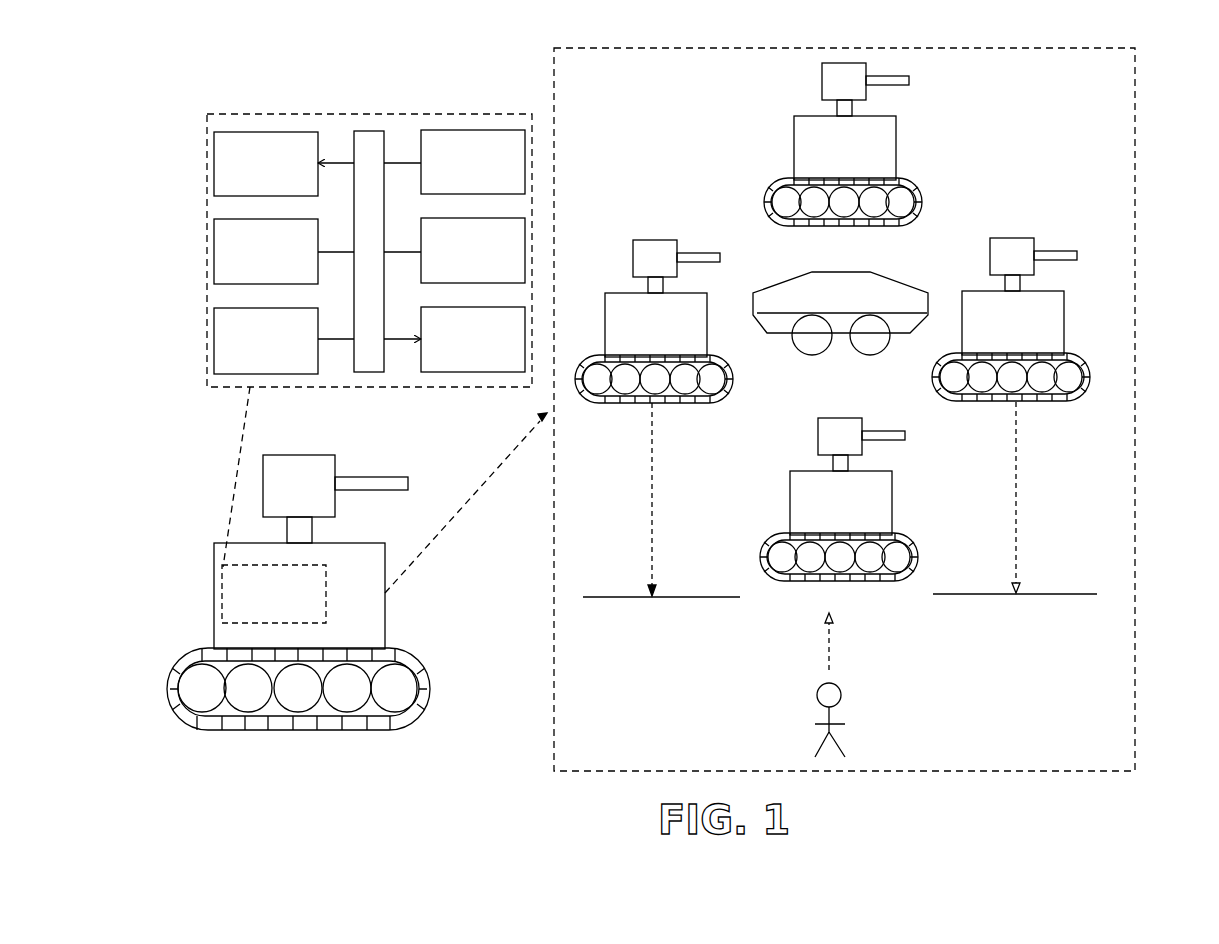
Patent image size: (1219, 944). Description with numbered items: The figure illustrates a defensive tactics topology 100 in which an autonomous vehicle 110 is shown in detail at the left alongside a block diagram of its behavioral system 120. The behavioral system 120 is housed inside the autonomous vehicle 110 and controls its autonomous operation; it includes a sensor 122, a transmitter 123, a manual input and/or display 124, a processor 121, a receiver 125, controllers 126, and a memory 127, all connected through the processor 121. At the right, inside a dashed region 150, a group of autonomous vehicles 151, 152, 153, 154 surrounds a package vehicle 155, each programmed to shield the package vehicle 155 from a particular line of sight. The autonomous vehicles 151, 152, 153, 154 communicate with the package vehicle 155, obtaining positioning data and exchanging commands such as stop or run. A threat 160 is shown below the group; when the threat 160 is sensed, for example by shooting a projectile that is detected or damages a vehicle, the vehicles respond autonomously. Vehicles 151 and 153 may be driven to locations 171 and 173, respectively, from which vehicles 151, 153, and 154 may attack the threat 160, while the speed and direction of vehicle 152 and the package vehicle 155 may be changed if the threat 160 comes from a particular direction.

The tactics topology 100 is at (1173, 422).
The autonomous vehicle 110 is at (324, 455).
The behavioral system 120 is at (326, 578).
The processor 121 is at (372, 372).
The sensor 122 is at (310, 178).
The transmitter 123 is at (310, 273).
The manual input and/or display 124 is at (312, 374).
The receiver 125 is at (421, 178).
The controllers 126 is at (421, 265).
The memory 127 is at (478, 372).
The environment 150 is at (553, 100).
The autonomous vehicle 151 is at (650, 240).
The autonomous vehicle 152 is at (798, 127).
The autonomous vehicle 153 is at (1008, 238).
The autonomous vehicle 154 is at (800, 473).
The package vehicle 155 is at (845, 270).
The threat 160 is at (822, 690).
The location 171 is at (638, 596).
The location 173 is at (995, 593).